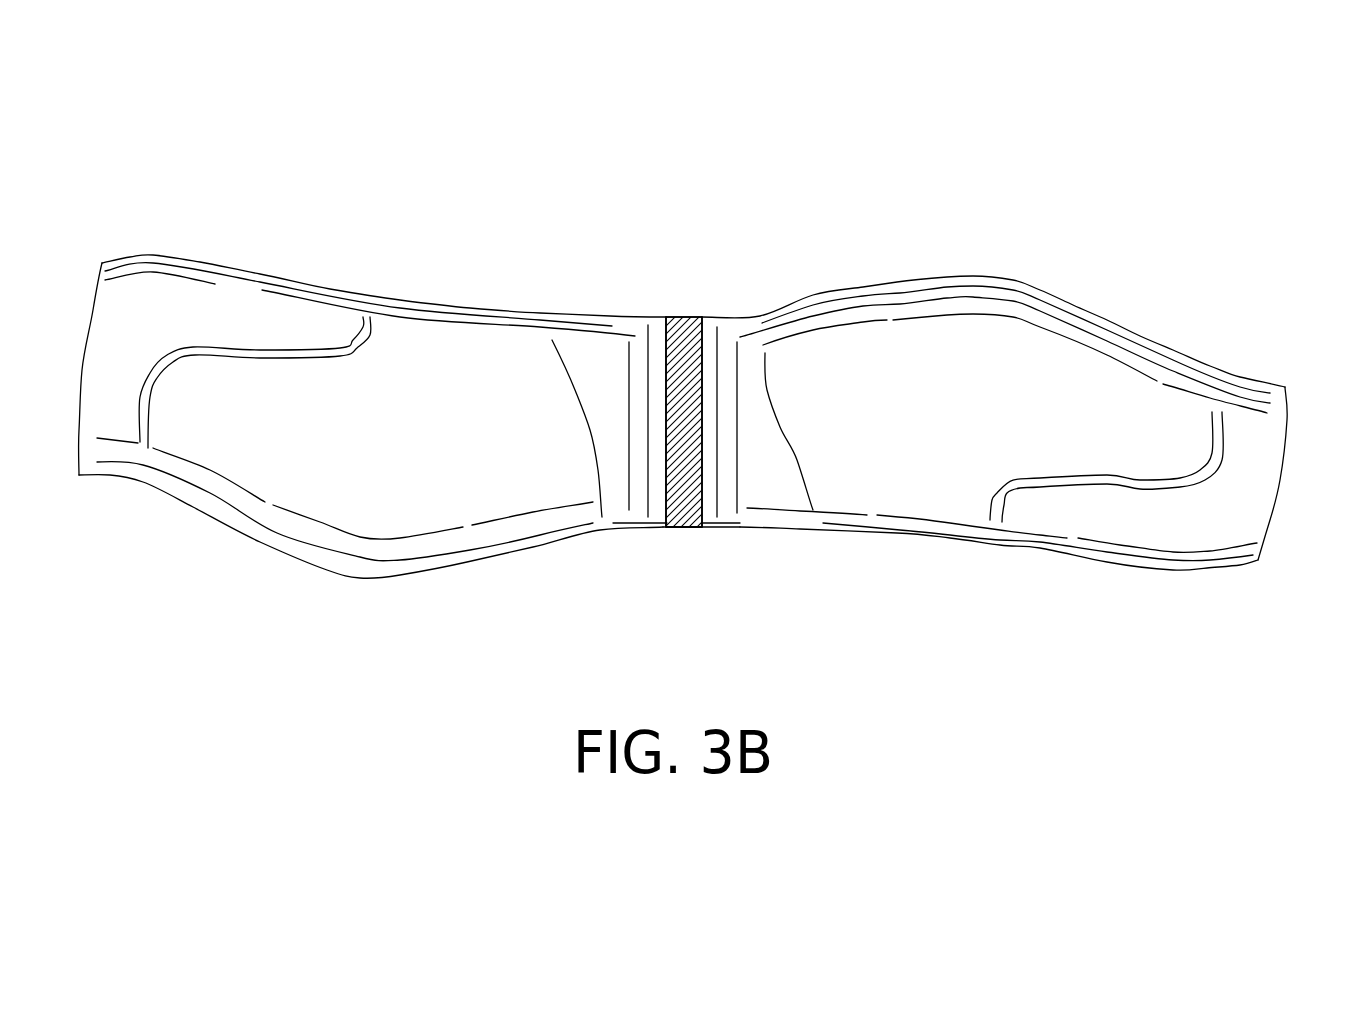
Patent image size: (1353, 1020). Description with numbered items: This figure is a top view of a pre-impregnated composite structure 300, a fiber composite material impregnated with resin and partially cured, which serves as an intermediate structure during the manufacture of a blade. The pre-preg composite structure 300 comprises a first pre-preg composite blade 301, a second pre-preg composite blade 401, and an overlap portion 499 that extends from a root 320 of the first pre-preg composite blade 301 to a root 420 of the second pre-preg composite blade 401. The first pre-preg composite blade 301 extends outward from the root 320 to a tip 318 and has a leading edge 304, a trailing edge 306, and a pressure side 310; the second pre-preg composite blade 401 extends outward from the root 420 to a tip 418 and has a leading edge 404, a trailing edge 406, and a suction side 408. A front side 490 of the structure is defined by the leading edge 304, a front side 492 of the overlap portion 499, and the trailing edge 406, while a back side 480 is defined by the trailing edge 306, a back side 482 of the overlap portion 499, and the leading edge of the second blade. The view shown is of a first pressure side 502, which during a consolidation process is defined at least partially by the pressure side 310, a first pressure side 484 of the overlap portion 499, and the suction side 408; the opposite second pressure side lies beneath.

The pre-preg composite structure 300 is at (364, 130).
The first pre-preg composite blade 301 is at (257, 190).
The tip 318 is at (102, 263).
The first pressure side 502 is at (238, 300).
The trailing edge 306 is at (292, 280).
The pressure side 310 is at (413, 388).
The leading edge 304 is at (195, 508).
The root 320 is at (665, 358).
The back side 480 is at (536, 240).
The back side 482 is at (683, 357).
The first pressure side 484 is at (686, 357).
The root 420 is at (702, 347).
The front side 492 is at (678, 527).
The overlap portion 499 is at (687, 487).
The second pre-preg composite blade 401 is at (1028, 188).
The suction side 408 is at (897, 390).
The leading edge 404 is at (1102, 317).
The trailing edge 406 is at (1022, 548).
The tip 418 is at (1285, 447).
The front side 490 is at (307, 667).